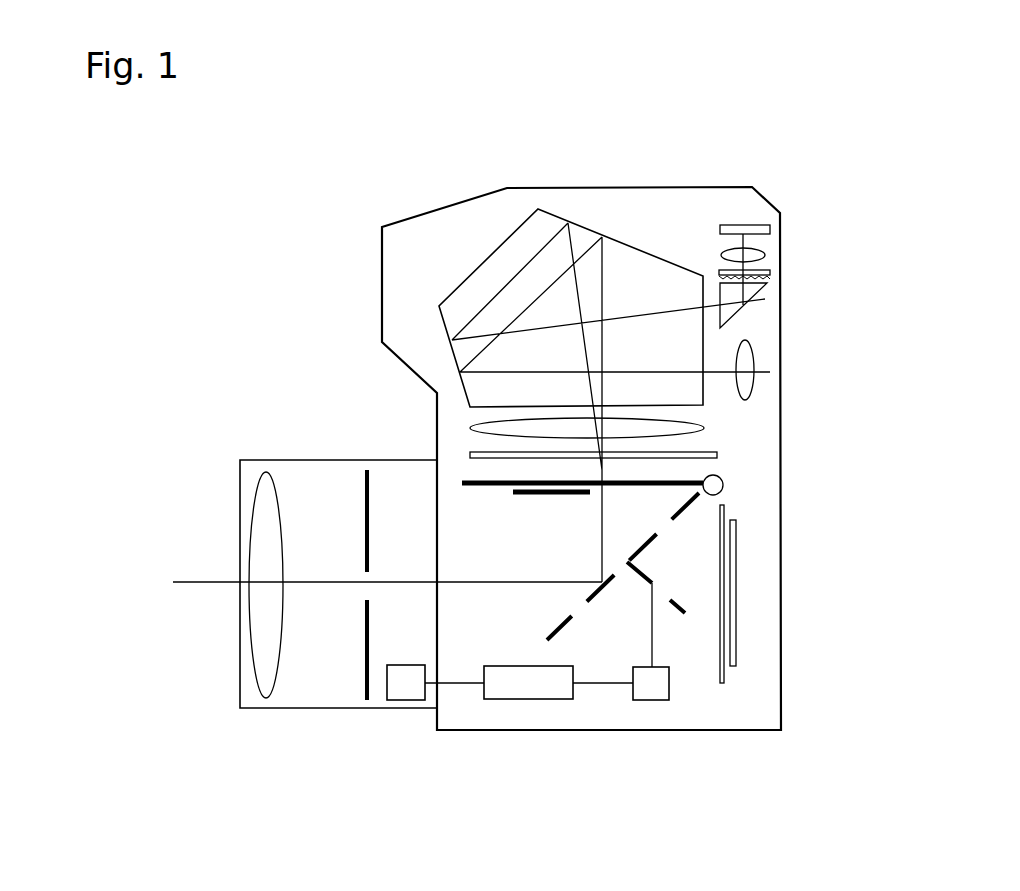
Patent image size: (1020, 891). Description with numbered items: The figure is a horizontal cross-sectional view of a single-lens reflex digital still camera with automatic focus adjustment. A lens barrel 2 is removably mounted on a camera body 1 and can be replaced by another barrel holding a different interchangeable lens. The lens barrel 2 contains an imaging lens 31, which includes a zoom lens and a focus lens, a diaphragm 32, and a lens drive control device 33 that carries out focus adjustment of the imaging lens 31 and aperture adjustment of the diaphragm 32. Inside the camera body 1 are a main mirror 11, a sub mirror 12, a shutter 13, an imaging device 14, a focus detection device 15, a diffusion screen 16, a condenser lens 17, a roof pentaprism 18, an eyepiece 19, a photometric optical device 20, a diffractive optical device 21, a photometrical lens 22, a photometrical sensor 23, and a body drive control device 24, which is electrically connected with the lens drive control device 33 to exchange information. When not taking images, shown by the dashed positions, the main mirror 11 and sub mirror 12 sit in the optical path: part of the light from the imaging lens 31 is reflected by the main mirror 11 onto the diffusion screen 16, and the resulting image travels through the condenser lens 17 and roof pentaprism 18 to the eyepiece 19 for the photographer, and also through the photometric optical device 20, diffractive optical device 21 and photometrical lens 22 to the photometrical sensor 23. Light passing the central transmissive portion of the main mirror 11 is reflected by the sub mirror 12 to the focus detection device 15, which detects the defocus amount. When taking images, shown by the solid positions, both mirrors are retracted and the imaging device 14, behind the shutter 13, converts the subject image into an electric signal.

The camera body 1 is at (415, 215).
The lens barrel 2 is at (312, 462).
The main mirror 11 is at (493, 487).
The sub mirror 12 is at (545, 493).
The shutter 13 is at (724, 685).
The imaging device 14 is at (737, 537).
The focus detection device 15 is at (645, 700).
The diffusion screen 16 is at (717, 455).
The condenser lens 17 is at (704, 429).
The roof pentaprism 18 is at (502, 237).
The eyepiece 19 is at (745, 348).
The photometric optical device 20 is at (765, 299).
The diffractive optical device 21 is at (768, 272).
The photometrical lens 22 is at (760, 253).
The photometrical sensor 23 is at (752, 230).
The body drive control device 24 is at (510, 699).
The imaging lens 31 is at (263, 660).
The diaphragm 32 is at (363, 670).
The lens drive control device 33 is at (407, 700).